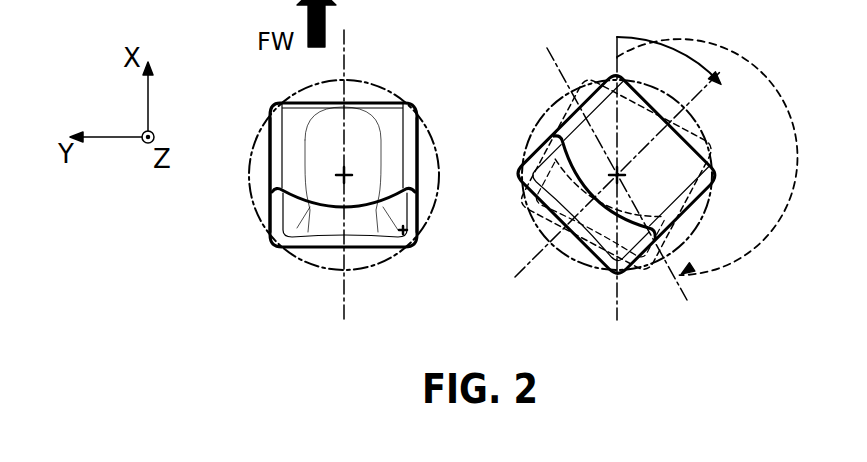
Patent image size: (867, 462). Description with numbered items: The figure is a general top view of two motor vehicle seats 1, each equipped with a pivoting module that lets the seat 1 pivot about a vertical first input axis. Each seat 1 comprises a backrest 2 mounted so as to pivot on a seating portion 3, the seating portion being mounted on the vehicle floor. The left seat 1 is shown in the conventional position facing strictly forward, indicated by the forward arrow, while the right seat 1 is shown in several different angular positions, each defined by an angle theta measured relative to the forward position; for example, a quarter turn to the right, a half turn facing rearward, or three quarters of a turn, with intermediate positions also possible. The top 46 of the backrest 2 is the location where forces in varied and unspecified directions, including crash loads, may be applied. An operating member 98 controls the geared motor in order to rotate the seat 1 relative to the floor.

The seat 1 is at (490, 213).
The backrest 2 is at (339, 193).
The seating portion 3 is at (260, 180).
The top of the backrest 46 is at (404, 232).
The operating member 98 is at (427, 135).